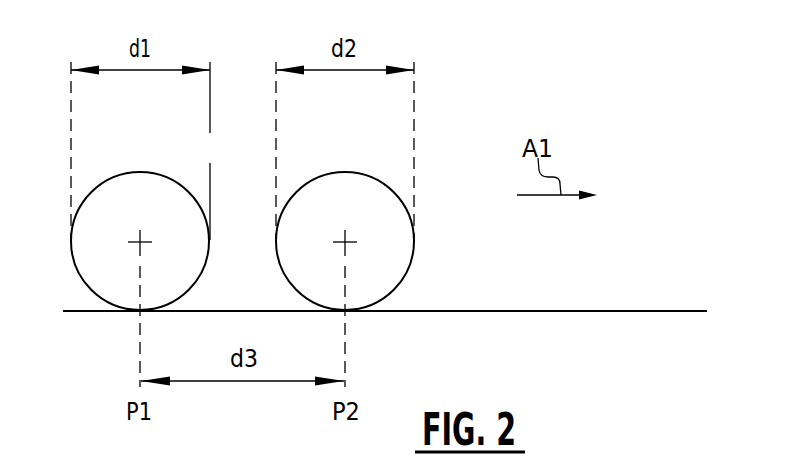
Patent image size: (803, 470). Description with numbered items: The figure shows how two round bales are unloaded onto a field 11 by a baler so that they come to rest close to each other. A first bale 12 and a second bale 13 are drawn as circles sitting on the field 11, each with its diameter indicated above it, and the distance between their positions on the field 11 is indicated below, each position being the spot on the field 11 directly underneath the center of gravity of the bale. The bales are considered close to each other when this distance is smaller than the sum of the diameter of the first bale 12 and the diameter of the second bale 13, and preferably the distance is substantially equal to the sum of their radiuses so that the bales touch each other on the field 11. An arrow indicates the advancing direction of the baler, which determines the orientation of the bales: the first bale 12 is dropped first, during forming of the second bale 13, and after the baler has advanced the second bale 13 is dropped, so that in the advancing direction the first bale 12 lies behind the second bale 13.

The field 11 is at (629, 311).
The first bale 12 is at (133, 180).
The second bale 13 is at (323, 180).